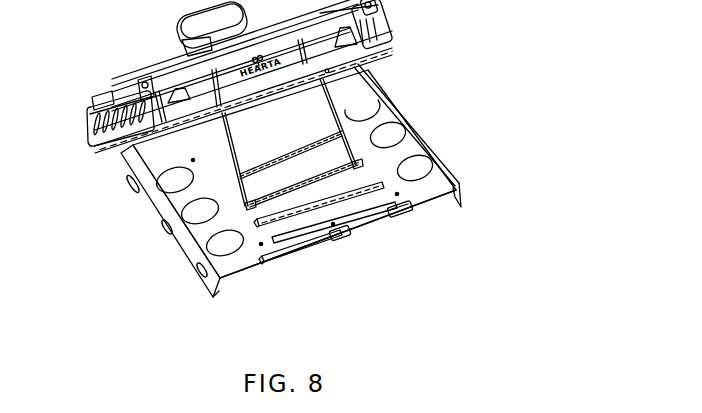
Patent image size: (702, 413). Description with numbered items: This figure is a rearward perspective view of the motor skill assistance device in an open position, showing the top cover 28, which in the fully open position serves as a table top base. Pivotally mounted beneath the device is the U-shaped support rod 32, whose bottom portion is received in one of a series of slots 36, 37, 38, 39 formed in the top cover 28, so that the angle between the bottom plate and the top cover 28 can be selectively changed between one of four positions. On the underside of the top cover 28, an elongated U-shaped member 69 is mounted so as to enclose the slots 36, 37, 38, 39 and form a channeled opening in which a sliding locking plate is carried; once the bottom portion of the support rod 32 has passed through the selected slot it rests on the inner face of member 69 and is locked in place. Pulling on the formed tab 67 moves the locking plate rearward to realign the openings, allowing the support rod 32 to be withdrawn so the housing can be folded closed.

The top cover 28 is at (173, 199).
The support rod 32 is at (237, 147).
The slot 36 is at (408, 212).
The slot 37 is at (385, 182).
The slot 38 is at (360, 163).
The slot 39 is at (337, 137).
The formed tab 67 is at (348, 234).
The elongated U-shaped member 69 is at (296, 246).